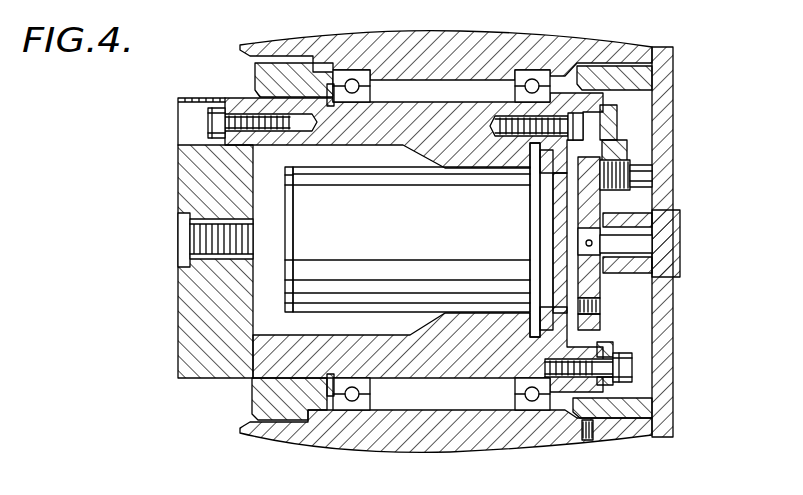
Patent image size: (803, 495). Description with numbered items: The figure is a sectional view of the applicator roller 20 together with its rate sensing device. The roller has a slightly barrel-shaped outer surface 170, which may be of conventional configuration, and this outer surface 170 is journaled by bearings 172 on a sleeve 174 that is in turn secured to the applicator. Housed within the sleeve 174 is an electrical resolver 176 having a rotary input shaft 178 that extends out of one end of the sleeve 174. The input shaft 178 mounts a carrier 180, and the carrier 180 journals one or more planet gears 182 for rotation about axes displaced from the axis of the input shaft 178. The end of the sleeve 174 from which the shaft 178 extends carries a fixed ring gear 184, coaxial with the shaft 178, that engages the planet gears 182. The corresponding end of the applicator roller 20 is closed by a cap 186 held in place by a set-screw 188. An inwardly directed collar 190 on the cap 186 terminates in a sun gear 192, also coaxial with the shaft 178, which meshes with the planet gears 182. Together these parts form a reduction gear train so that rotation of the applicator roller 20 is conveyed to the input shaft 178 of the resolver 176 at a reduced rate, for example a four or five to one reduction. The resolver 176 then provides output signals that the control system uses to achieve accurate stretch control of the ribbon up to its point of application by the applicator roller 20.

The applicator roller 20 is at (478, 25).
The outer surface 170 is at (418, 30).
The bearings 172 is at (348, 77).
The sleeve 174 is at (360, 130).
The electrical resolver 176 is at (440, 229).
The rotary input shaft 178 is at (574, 242).
The carrier 180 is at (594, 293).
The planet gears 182 is at (621, 156).
The fixed ring gear 184 is at (618, 128).
The cap 186 is at (664, 325).
The set-screw 188 is at (588, 441).
The collar 190 is at (634, 220).
The sun gear 192 is at (619, 269).